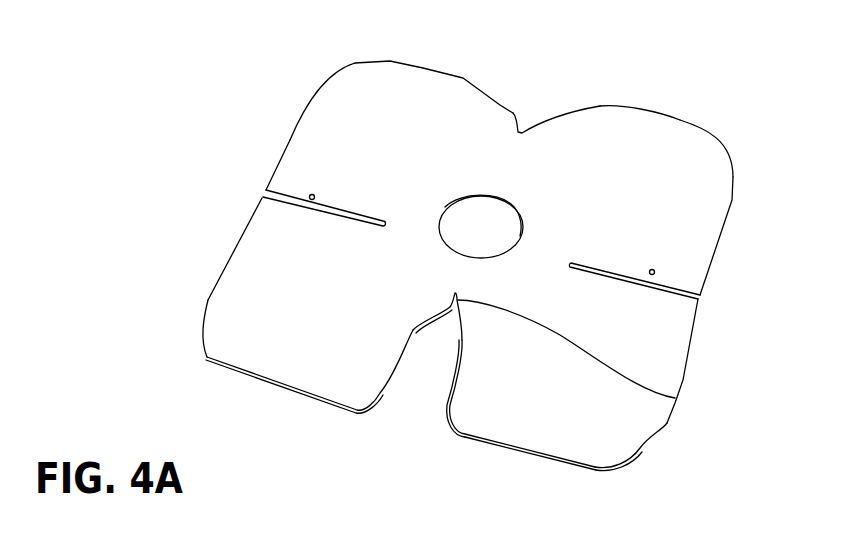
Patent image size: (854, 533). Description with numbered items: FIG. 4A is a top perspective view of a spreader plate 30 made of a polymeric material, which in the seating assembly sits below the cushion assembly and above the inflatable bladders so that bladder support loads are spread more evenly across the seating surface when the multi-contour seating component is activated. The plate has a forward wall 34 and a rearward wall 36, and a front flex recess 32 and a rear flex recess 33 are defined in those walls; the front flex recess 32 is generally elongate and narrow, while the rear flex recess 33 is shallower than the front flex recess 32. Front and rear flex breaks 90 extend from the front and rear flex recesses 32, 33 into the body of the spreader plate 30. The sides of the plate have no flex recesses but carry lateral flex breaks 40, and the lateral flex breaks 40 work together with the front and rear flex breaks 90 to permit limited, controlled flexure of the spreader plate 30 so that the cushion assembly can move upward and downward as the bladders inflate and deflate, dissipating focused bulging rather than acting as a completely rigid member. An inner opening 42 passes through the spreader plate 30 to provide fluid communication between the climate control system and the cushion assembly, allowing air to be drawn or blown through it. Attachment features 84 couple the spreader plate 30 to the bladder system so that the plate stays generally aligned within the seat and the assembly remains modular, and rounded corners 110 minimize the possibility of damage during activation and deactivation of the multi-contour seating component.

The spreader plate 30 is at (547, 382).
The front flex recess 32 is at (402, 365).
The rear flex recess 33 is at (500, 102).
The forward wall 34 is at (277, 390).
The rearward wall 36 is at (423, 68).
The lateral flex breaks 40 is at (353, 210).
The inner opening 42 is at (490, 225).
The attachment features 84 is at (308, 197).
The front and rear flex breaks 90 is at (522, 132).
The rounded corners 110 is at (333, 72).